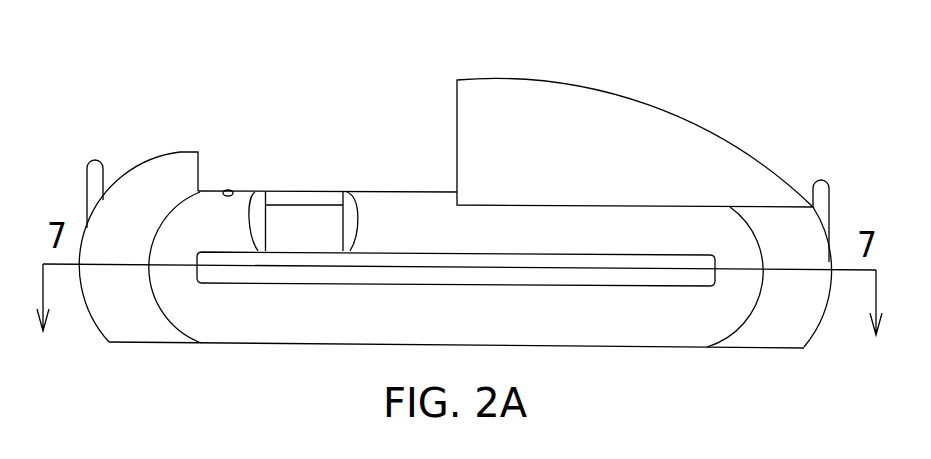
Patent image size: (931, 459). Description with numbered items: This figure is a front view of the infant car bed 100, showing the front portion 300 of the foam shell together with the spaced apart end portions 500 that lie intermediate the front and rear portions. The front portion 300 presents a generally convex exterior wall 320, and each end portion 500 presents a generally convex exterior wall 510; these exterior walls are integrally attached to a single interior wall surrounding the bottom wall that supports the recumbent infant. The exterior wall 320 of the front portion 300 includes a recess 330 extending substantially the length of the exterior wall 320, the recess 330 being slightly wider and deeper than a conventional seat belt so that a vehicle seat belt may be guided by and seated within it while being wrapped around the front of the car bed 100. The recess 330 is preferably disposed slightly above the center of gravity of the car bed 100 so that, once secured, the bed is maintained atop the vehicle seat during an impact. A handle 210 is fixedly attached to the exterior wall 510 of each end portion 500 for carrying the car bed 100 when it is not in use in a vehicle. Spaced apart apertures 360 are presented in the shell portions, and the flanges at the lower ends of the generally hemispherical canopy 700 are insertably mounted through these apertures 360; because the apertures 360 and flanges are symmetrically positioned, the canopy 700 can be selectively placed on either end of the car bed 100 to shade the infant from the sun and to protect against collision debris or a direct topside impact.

The car bed 100 is at (338, 72).
The handle 210 is at (95, 178).
The front portion 300 is at (415, 190).
The exterior wall 320 is at (282, 310).
The recess 330 is at (597, 278).
The apertures 360 is at (231, 190).
The end portions 500 is at (177, 150).
The exterior walls 510 is at (152, 178).
The canopy 700 is at (587, 105).